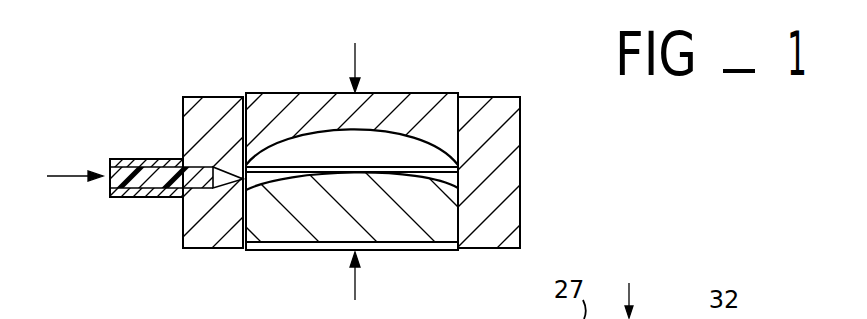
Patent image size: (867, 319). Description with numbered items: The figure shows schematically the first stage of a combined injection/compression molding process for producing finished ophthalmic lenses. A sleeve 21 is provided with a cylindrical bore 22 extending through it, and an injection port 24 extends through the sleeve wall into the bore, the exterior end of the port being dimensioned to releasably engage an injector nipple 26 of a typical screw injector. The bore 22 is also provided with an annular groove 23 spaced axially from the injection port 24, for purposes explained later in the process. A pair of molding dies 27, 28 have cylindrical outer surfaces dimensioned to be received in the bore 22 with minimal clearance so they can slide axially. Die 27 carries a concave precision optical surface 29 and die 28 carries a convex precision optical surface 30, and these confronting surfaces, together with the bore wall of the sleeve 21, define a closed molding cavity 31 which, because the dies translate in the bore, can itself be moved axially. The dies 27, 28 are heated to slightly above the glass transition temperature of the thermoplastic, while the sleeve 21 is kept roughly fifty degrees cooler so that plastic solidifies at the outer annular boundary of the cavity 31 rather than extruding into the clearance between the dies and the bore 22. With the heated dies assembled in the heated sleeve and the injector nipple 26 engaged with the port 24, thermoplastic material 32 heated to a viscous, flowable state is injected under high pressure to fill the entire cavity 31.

The sleeve 21 is at (183, 110).
The cylindrical bore 22 is at (246, 119).
The annular groove 23 is at (258, 163).
The injection port 24 is at (226, 175).
The injector nipple 26 is at (133, 197).
The molding die 27 is at (290, 113).
The molding die 28 is at (398, 226).
The concave precision optical surface 29 is at (367, 130).
The convex precision optical surface 30 is at (425, 179).
The molding cavity 31 is at (410, 150).
The thermoplastic material 32 is at (158, 182).